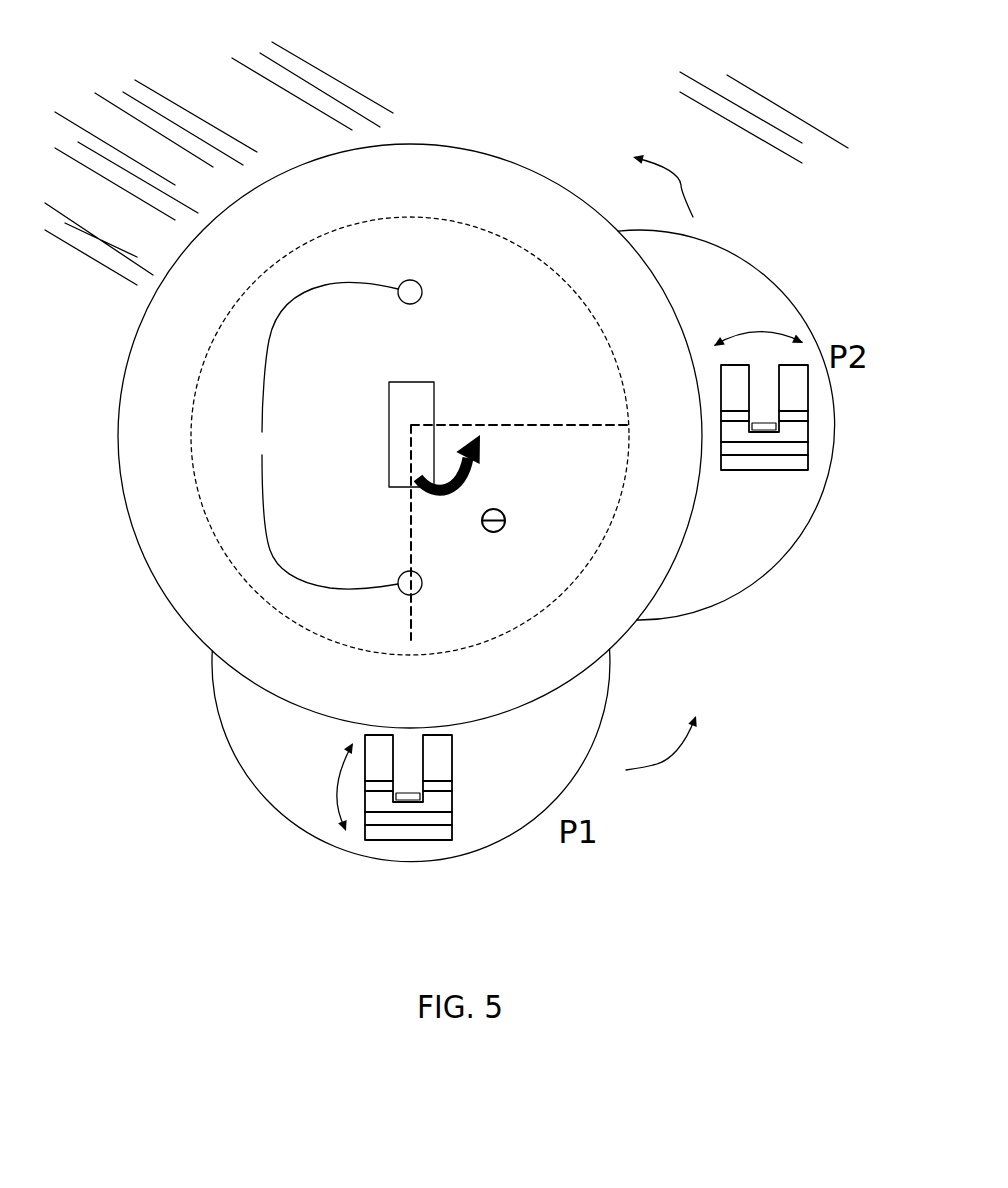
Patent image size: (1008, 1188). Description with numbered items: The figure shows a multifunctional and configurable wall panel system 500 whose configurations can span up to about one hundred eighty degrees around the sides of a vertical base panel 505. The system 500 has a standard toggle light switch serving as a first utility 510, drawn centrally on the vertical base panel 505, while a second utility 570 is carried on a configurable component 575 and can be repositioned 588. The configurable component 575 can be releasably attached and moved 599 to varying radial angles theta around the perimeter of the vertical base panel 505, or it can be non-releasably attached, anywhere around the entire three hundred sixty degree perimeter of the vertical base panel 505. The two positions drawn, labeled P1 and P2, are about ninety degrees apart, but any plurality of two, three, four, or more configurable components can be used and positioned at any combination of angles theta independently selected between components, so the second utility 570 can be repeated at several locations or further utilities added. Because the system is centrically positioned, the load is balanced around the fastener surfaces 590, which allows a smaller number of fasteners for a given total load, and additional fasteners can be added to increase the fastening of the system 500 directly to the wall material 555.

The system 500 is at (857, 262).
The vertical base panel 505 is at (143, 558).
The first utility 510 is at (389, 452).
The wall material 555 is at (446, 163).
The second utility 570 is at (433, 753).
The configurable component 575 is at (728, 283).
The repositioning 588 is at (335, 800).
The fastener surfaces 590 is at (333, 437).
The movement of the configurable component 599 is at (681, 185).